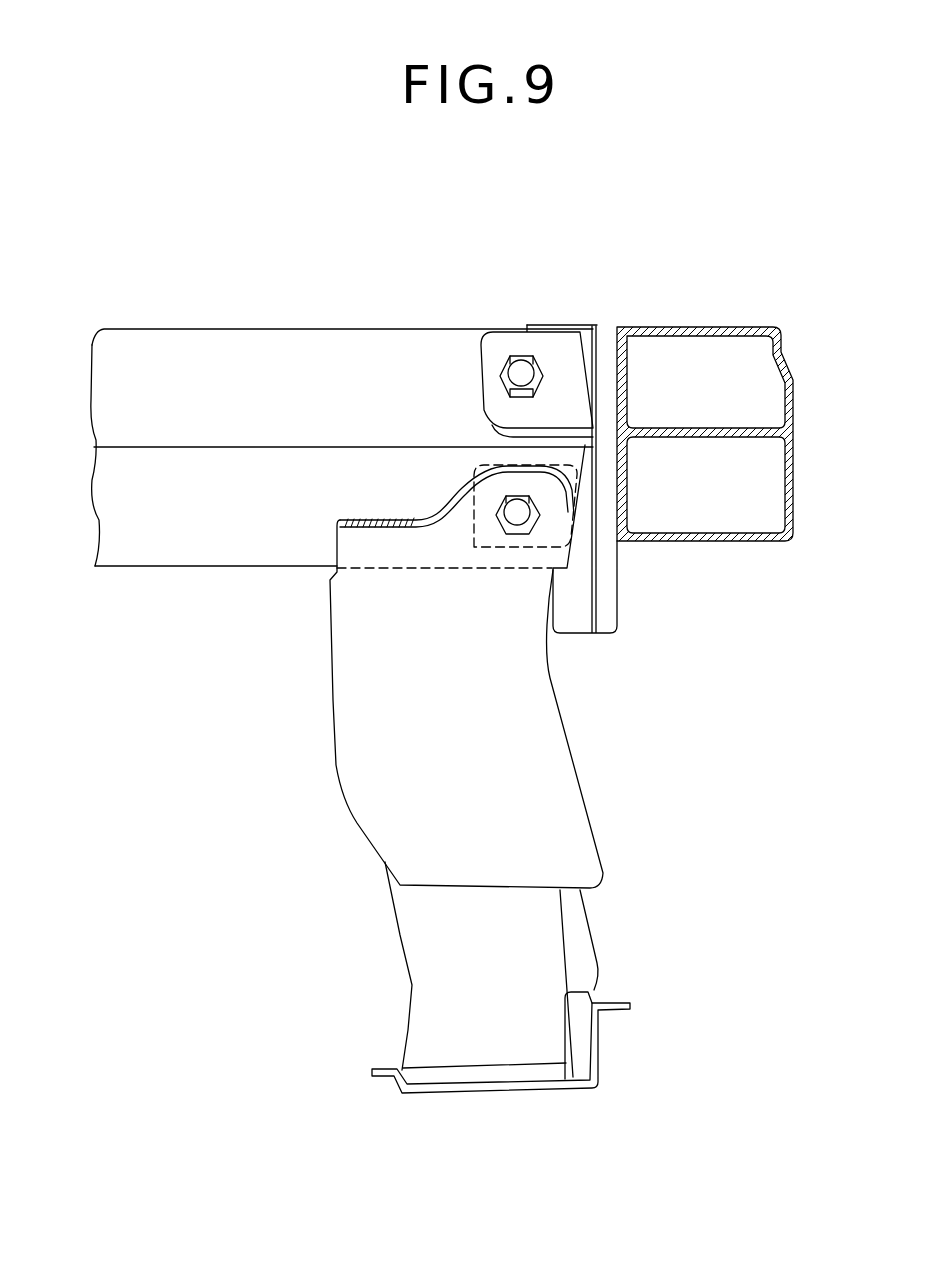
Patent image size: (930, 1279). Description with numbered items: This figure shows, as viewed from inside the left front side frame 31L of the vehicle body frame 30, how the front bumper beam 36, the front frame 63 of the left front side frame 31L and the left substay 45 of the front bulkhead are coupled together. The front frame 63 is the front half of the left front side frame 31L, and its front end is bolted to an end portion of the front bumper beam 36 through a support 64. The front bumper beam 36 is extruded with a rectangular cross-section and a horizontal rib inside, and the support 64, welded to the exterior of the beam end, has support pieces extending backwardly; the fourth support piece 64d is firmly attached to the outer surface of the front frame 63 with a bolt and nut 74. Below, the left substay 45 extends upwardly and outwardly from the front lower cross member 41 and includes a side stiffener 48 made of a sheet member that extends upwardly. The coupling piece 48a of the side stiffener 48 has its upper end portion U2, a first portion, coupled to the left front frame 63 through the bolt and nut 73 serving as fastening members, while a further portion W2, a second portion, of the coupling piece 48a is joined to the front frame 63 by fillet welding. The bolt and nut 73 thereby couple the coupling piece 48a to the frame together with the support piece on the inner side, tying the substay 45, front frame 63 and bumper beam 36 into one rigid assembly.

The vehicle body frame 30 is at (281, 116).
The left front side frame 31L is at (131, 322).
The front frame 63 is at (192, 340).
The bolt and nut 74 is at (520, 360).
The fourth support piece 64d is at (552, 345).
The support 64 is at (611, 326).
The front bumper beam 36 is at (723, 326).
The coupling piece 48a is at (455, 515).
The upper end portion U2 is at (510, 483).
The portion W2 is at (357, 514).
The bolt and nut 73 is at (519, 535).
The side stiffener 48 is at (363, 748).
The left substay 45 is at (355, 826).
The front lower cross member 41 is at (600, 1050).